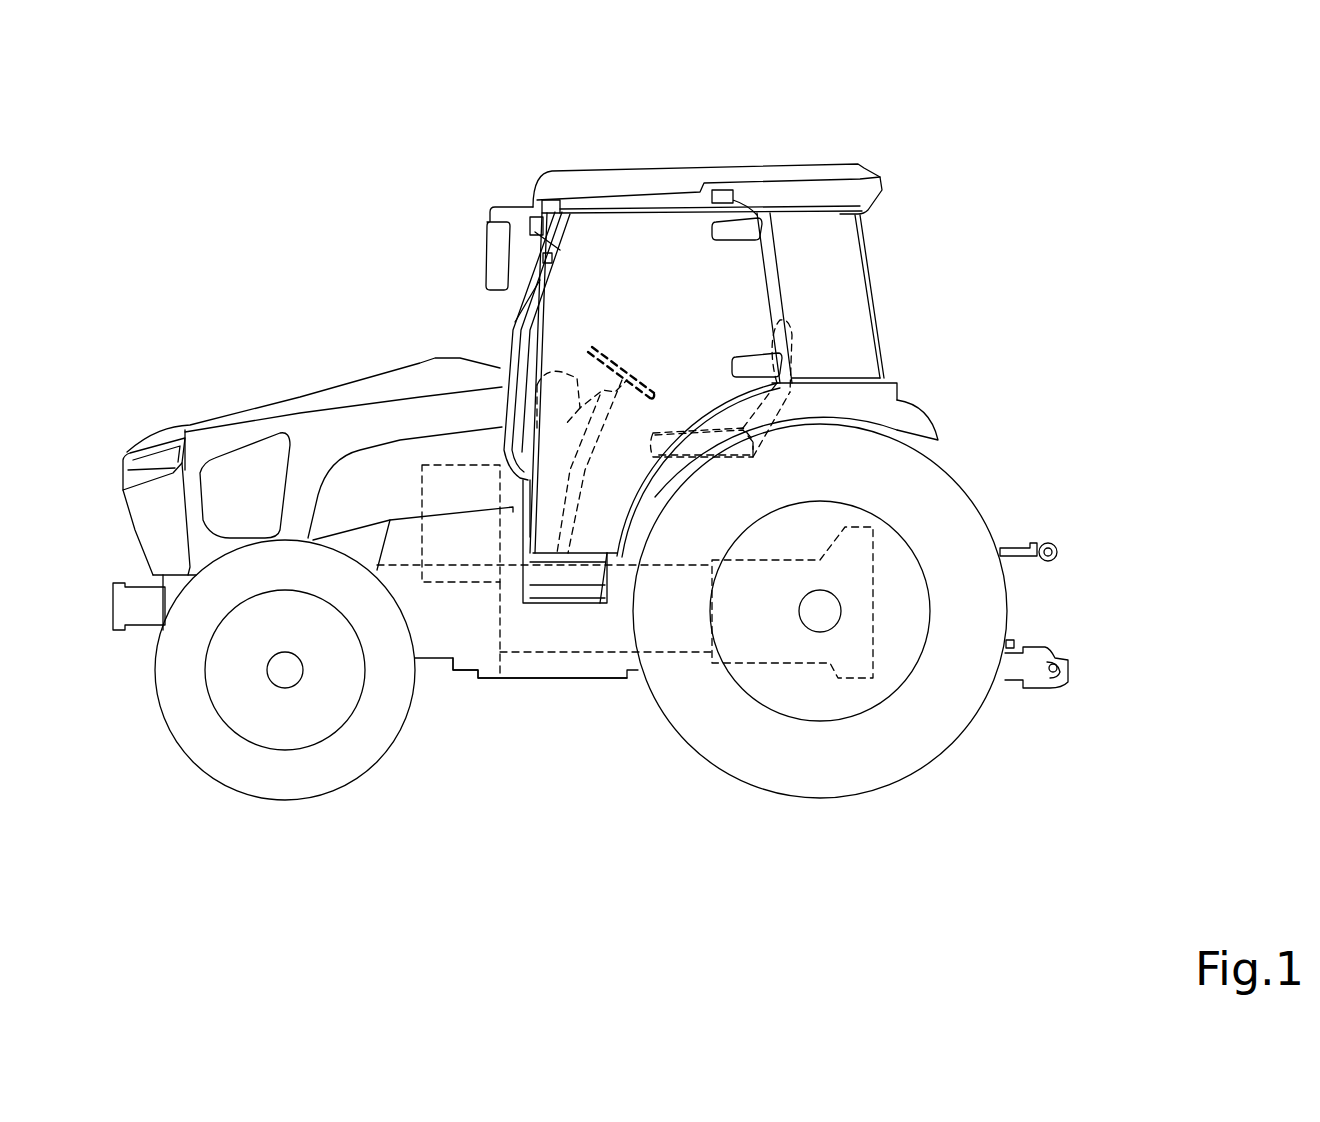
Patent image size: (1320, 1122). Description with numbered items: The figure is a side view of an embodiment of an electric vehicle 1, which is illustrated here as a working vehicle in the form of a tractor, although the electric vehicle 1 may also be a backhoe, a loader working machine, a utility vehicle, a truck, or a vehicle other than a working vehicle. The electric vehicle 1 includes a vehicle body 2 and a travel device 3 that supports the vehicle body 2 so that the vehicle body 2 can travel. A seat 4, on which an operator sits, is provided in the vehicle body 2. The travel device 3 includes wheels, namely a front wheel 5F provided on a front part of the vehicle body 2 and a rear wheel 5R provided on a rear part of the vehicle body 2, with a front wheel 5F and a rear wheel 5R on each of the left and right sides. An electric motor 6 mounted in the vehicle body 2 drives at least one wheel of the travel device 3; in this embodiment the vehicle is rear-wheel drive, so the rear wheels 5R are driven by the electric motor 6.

The electric vehicle 1 is at (330, 172).
The vehicle body 2 is at (450, 680).
The travel device 3 is at (990, 717).
The seat 4 is at (655, 433).
The front wheel 5F is at (380, 763).
The rear wheel 5R is at (935, 770).
The electric motor 6 is at (453, 462).